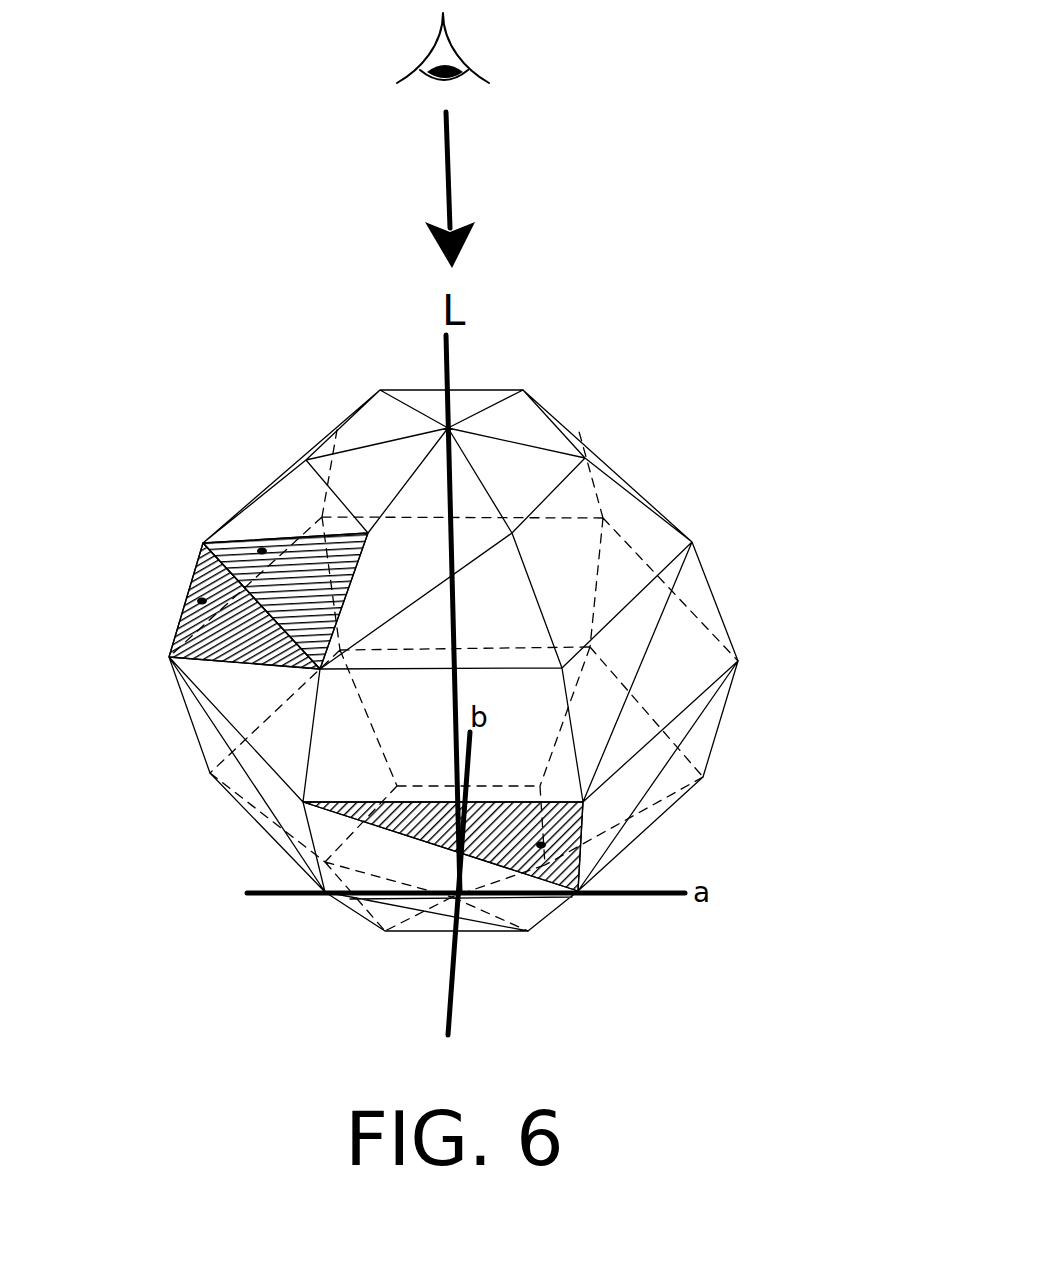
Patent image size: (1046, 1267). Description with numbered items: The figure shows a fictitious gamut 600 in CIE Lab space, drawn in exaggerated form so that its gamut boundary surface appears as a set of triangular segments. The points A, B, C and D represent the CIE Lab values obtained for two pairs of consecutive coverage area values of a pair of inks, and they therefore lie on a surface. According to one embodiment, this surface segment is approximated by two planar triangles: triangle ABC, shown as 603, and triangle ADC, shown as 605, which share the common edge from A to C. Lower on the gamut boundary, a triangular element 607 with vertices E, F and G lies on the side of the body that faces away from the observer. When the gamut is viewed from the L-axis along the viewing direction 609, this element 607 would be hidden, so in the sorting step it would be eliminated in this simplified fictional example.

The fictitious gamut 600 is at (708, 452).
The planar triangle ABC 603 is at (202, 602).
The planar triangle ADC 605 is at (262, 552).
The triangular element EFG 607 is at (587, 895).
The viewing direction 609 is at (445, 174).